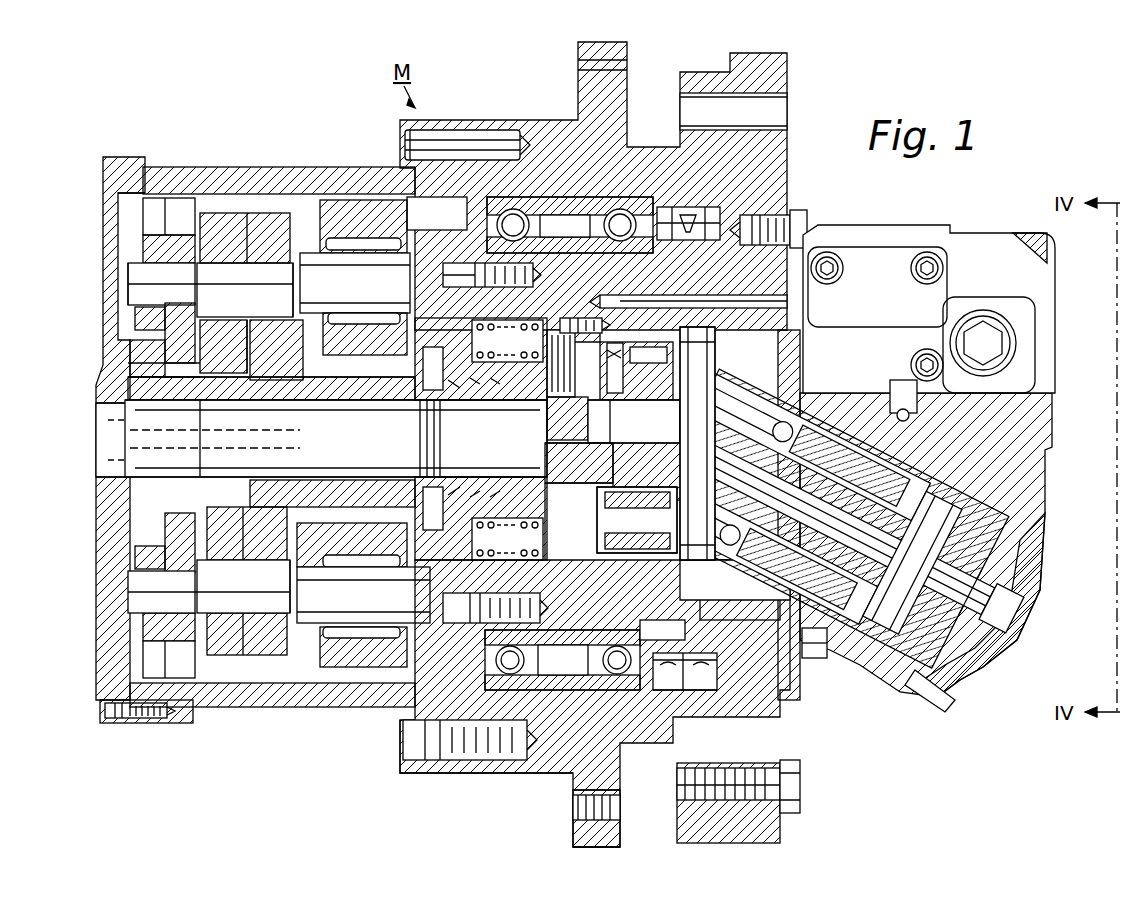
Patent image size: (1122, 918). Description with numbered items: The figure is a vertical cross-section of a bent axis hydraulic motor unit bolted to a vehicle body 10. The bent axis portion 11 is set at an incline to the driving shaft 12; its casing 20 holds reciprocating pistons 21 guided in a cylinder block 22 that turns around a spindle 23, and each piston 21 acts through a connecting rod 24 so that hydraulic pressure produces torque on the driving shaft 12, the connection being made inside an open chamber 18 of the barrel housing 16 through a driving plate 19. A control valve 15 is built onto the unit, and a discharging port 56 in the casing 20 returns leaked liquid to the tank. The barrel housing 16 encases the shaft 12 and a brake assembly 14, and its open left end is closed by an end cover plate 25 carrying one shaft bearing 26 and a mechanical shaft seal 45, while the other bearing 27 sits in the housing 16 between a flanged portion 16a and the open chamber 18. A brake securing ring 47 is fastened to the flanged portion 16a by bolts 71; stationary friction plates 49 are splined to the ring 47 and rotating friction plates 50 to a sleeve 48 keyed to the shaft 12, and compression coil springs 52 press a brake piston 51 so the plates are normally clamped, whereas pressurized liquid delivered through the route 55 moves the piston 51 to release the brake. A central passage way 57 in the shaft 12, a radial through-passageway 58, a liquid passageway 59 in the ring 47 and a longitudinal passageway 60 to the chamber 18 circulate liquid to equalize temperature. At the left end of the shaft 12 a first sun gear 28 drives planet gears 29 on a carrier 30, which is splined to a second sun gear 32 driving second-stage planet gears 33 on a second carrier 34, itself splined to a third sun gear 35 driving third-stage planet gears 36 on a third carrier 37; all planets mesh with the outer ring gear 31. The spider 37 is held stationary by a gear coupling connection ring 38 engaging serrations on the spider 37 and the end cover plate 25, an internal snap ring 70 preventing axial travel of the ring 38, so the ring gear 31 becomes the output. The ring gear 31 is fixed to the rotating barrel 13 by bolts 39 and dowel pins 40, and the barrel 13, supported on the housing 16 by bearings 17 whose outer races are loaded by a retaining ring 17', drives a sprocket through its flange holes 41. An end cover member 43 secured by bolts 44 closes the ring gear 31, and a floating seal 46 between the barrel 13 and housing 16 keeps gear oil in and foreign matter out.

The vehicle body 10 is at (782, 830).
The bent axis portion 11 is at (887, 690).
The driving shaft 12 is at (373, 458).
The rotating barrel 13 is at (522, 120).
The brake assembly 14 is at (585, 308).
The control valve 15 is at (988, 240).
The barrel housing 16 is at (595, 665).
The flanged portion 16a is at (620, 340).
The bearings 17 is at (562, 640).
The retaining ring 17' is at (495, 705).
The open chamber 18 is at (745, 590).
The driving plate 19 is at (695, 362).
The casing 20 is at (926, 545).
The pistons 21 is at (852, 660).
The cylinder block 22 is at (880, 395).
The spindle 23 is at (890, 502).
The connecting rod 24 is at (750, 392).
The end cover plate 25 is at (445, 738).
The bearing 26 is at (423, 567).
The bearing 27 is at (655, 626).
The first sun gear 28 is at (135, 375).
The planet gears 29 is at (145, 350).
The carrier 30 is at (180, 330).
The outer ring gear 31 is at (237, 186).
The second sun gear 32 is at (236, 392).
The second-stage planet gears 33 is at (276, 232).
The second carrier 34 is at (270, 350).
The third sun gear 35 is at (363, 382).
The third-stage planet gears 36 is at (385, 342).
The third carrier 37 is at (413, 300).
The gear coupling connection ring 38 is at (445, 212).
The bolts 39 is at (400, 745).
The dowel pins 40 is at (440, 143).
The flange holes 41 is at (575, 822).
The end cover member 43 is at (97, 567).
The bolts 44 is at (110, 725).
The mechanical shaft seal 45 is at (478, 392).
The floating seal 46 is at (660, 692).
The brake securing ring 47 is at (481, 439).
The sleeve 48 is at (540, 420).
The stationary friction plates 49 is at (618, 395).
The rotating friction plates 50 is at (606, 432).
The brake piston 51 is at (570, 225).
The compression coil springs 52 is at (555, 330).
The hydraulic liquid route 55 is at (728, 300).
The discharging port 56 is at (828, 658).
The central passage way 57 is at (680, 445).
The through-passageway 58 is at (584, 463).
The liquid passageway 59 is at (588, 553).
The longitudinal passageway 60 is at (730, 590).
The internal snap ring 70 is at (455, 640).
The bolts 71 is at (500, 333).